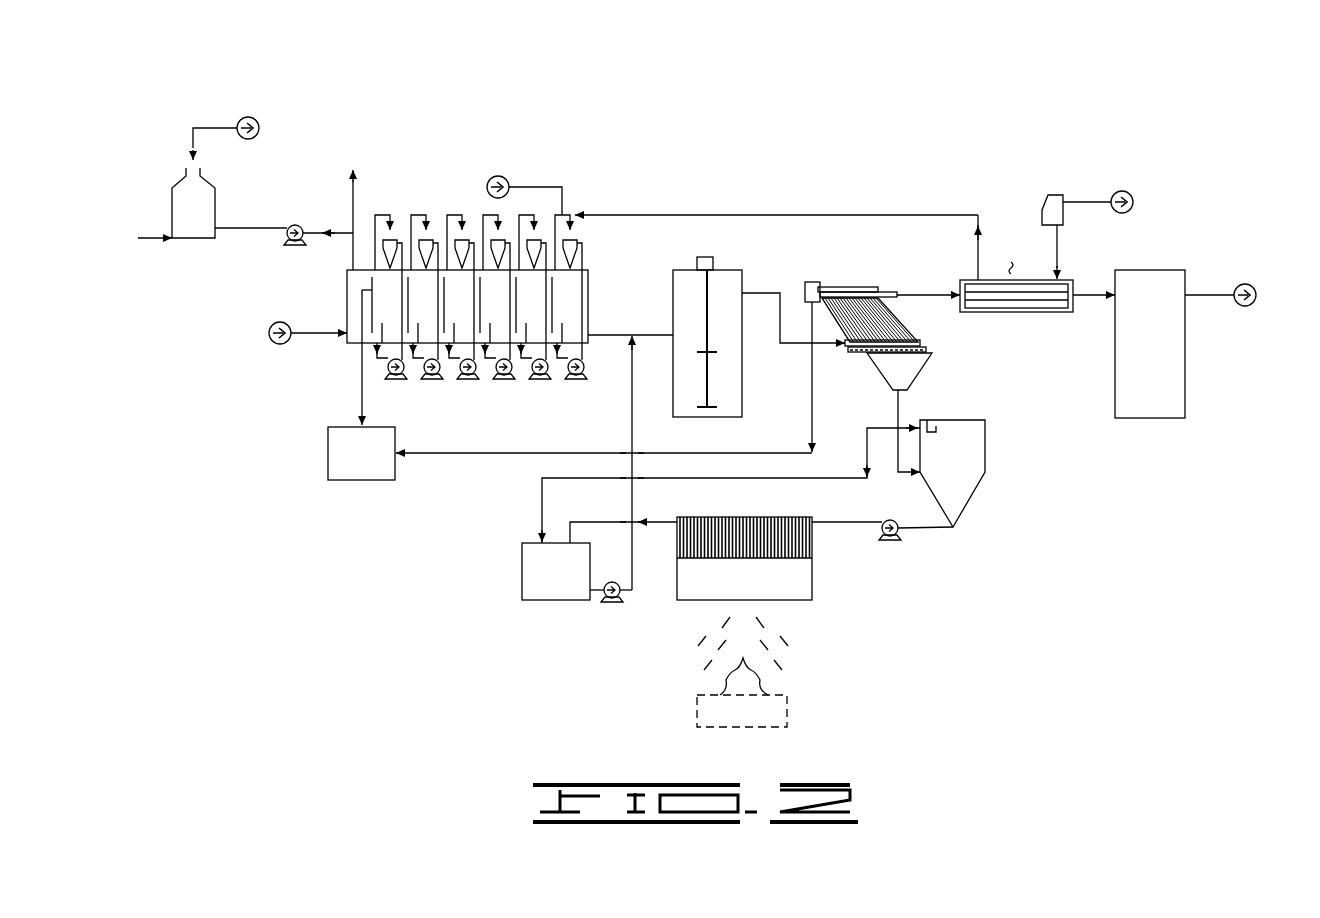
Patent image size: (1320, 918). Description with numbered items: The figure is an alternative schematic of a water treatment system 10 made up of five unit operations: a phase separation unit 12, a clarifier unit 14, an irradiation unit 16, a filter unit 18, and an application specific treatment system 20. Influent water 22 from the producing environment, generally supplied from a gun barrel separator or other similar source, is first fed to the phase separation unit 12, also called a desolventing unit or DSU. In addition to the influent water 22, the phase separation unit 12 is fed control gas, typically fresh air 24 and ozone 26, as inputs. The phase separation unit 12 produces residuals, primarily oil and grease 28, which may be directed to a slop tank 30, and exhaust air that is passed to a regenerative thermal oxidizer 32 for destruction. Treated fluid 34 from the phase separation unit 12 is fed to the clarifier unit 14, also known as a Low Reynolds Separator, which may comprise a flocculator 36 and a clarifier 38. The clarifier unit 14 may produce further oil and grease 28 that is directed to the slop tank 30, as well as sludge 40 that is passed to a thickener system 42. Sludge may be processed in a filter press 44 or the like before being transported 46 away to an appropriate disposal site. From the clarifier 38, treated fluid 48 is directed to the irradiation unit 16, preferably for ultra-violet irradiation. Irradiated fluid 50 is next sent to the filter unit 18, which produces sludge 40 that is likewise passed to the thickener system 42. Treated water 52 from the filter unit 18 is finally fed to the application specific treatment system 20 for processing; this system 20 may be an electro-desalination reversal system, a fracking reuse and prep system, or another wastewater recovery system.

The water treatment system 10 is at (865, 153).
The phase separation unit 12 is at (428, 182).
The clarifier unit 14 is at (795, 252).
The irradiation unit 16 is at (1068, 280).
The filter unit 18 is at (1185, 270).
The application specific treatment system 20 is at (1256, 302).
The influent water 22 is at (270, 340).
The fresh air 24 is at (500, 177).
The ozone 26 is at (640, 212).
The oil and grease 28 is at (360, 343).
The slop tank 30 is at (360, 480).
The regenerative thermal oxidizer 32 is at (178, 188).
The treated fluid 34 is at (615, 335).
The flocculator 36 is at (730, 268).
The clarifier 38 is at (850, 283).
The sludge 40 is at (900, 415).
The thickener system 42 is at (968, 500).
The filter press 44 is at (812, 580).
The transport 46 is at (787, 698).
The treated fluid 48 is at (928, 302).
The irradiated fluid 50 is at (1090, 297).
The treated water 52 is at (1205, 297).